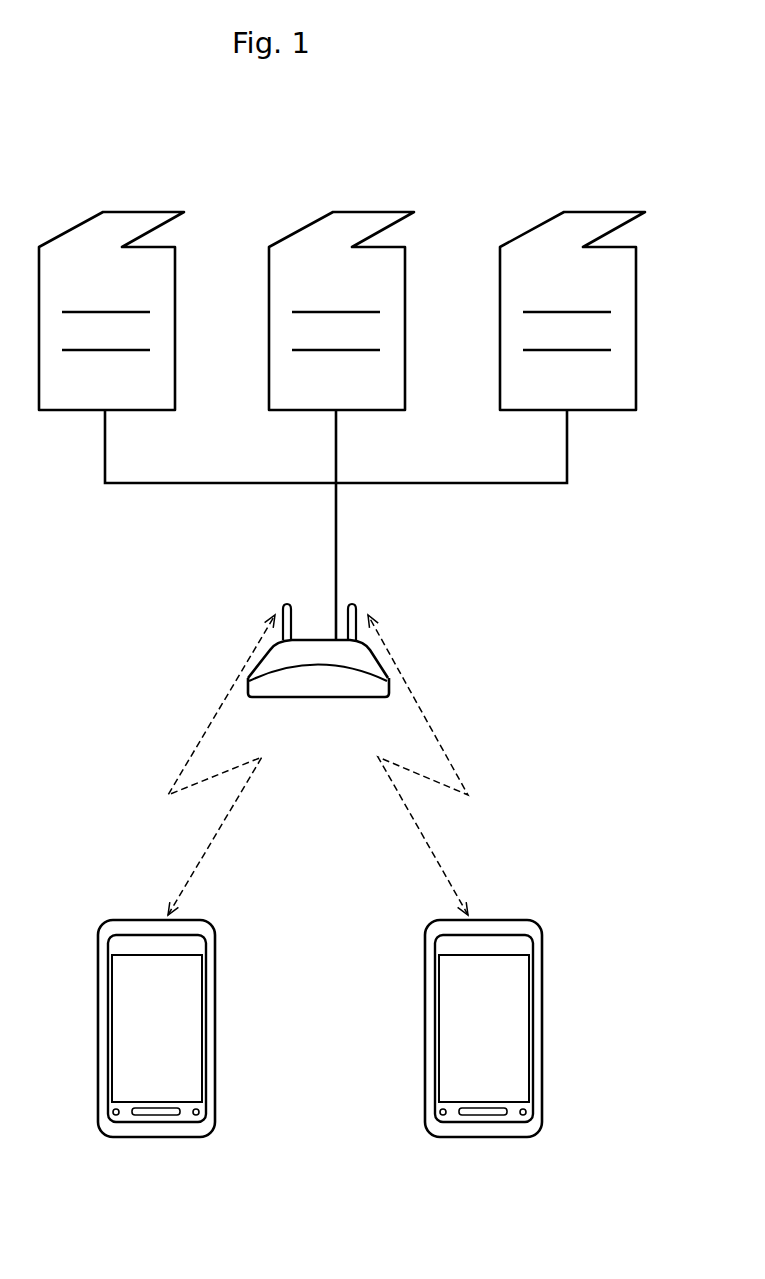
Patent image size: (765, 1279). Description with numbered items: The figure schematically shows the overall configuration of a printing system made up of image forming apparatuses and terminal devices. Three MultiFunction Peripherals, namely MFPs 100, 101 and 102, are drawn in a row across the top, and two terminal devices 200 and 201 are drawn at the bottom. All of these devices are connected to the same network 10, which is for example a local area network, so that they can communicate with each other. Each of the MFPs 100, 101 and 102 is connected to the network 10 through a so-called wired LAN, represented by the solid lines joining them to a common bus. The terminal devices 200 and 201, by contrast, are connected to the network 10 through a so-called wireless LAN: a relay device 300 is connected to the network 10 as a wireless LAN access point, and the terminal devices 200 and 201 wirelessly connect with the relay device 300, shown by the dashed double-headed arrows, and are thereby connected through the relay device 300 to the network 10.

The network 10 is at (503, 483).
The MFP 100 is at (155, 212).
The MFP 101 is at (385, 212).
The MFP 102 is at (616, 212).
The terminal device 200 is at (215, 955).
The terminal device 201 is at (542, 955).
The relay device 300 is at (323, 698).